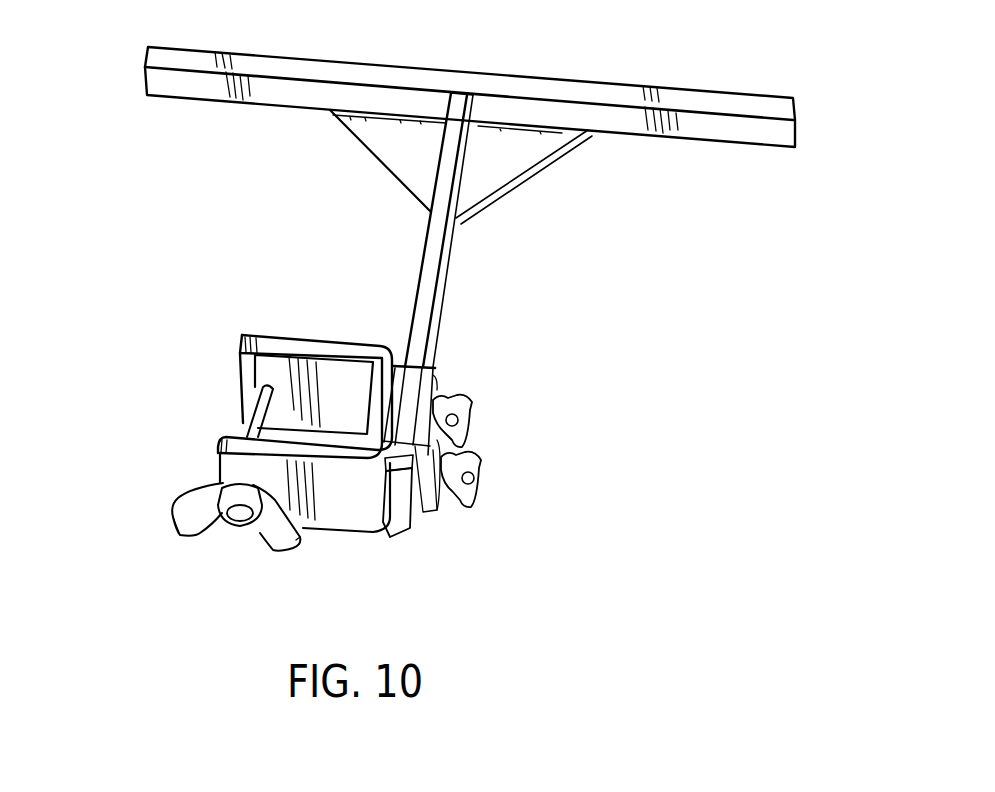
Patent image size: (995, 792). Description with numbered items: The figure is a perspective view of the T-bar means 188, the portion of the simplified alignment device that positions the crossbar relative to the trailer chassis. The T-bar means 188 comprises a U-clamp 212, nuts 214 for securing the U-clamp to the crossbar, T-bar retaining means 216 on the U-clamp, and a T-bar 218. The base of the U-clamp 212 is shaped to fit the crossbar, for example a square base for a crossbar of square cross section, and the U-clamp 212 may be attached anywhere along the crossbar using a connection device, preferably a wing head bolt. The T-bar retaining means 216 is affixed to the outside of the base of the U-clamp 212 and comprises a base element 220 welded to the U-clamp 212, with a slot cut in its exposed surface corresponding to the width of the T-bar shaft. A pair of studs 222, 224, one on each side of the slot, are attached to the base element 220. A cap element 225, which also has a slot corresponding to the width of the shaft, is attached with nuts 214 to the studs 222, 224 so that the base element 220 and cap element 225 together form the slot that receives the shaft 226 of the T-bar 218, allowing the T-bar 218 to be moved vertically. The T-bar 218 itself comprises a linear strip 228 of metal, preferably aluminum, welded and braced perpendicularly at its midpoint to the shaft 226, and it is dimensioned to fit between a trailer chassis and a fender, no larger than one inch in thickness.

The T-bar means 188 is at (208, 207).
The U-clamp 212 is at (352, 518).
The nuts 214 is at (458, 402).
The T-bar retaining means 216 is at (428, 547).
The T-bar 218 is at (579, 229).
The base element 220 is at (402, 362).
The stud 222 is at (461, 418).
The stud 224 is at (474, 482).
The cap element 225 is at (432, 393).
The shaft 226 is at (432, 234).
The linear strip 228 is at (613, 88).